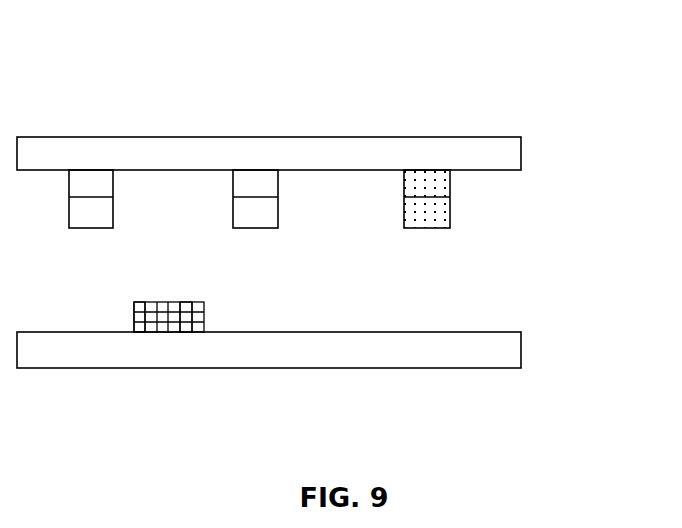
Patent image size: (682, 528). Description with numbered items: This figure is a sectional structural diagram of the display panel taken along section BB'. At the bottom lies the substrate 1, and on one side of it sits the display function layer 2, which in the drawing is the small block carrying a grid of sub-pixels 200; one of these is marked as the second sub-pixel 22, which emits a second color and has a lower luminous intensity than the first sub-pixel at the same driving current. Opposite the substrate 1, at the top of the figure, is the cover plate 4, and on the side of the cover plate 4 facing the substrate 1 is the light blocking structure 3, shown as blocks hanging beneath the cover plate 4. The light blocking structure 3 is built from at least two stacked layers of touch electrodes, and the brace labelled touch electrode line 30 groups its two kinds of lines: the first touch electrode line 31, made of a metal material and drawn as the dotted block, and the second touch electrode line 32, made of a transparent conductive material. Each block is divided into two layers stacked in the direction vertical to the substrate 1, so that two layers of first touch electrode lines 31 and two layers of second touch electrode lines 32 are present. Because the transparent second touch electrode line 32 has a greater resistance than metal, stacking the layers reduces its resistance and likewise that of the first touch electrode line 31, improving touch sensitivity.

The substrate 1 is at (521, 348).
The display function layer 2 is at (188, 374).
The second sub-pixel 22 is at (205, 308).
The sub-pixels 200 is at (140, 310).
The light blocking structure 3 is at (523, 148).
The pad group 30 is at (449, 77).
The first touch electrode line 31 is at (458, 197).
The second touch electrode line 32 is at (260, 184).
The cover plate 4 is at (521, 148).